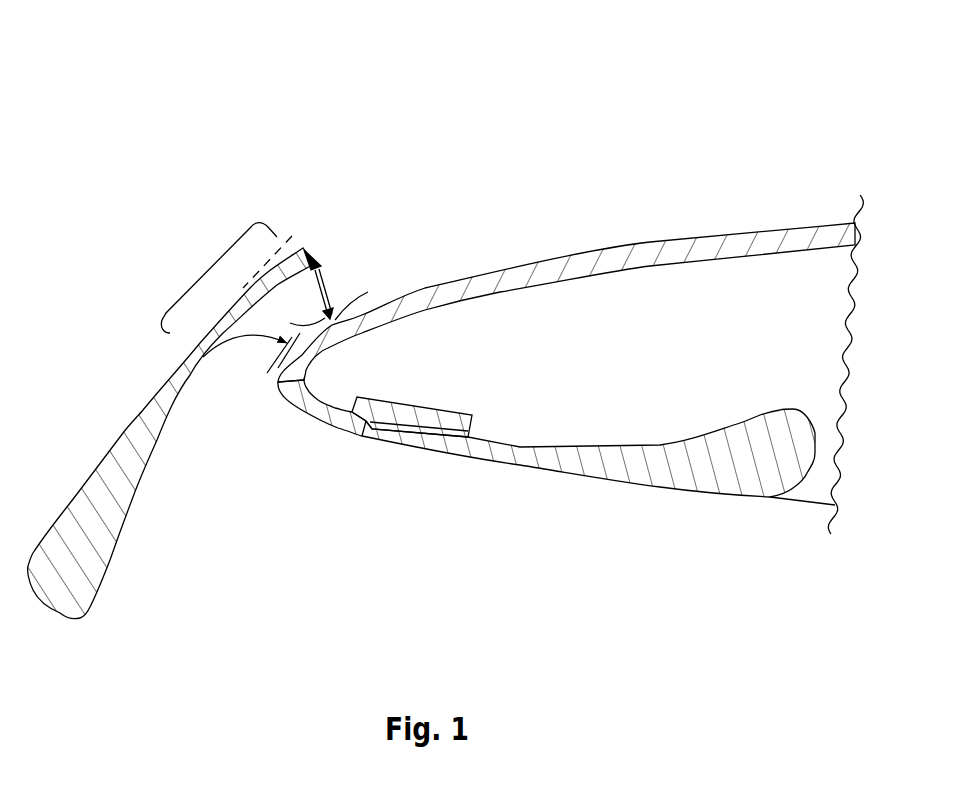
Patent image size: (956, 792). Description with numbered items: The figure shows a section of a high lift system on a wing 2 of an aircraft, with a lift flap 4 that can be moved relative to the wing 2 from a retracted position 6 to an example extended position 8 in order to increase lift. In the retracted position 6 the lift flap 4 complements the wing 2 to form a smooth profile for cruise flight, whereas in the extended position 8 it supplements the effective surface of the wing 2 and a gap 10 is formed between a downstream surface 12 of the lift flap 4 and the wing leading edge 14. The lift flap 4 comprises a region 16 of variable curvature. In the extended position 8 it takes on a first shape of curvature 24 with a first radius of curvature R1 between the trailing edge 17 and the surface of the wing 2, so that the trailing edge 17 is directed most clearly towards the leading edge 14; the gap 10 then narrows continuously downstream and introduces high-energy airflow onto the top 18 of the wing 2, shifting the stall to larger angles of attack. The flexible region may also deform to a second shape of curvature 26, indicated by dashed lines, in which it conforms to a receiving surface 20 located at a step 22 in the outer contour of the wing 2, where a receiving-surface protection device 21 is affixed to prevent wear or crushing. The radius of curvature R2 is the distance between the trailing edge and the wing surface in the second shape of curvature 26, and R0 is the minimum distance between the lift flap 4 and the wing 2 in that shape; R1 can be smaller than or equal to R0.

The wing 2 is at (533, 307).
The lift flap 4 is at (128, 447).
The retracted position 6 is at (628, 548).
The extended position 8 is at (190, 226).
The gap 10 is at (372, 268).
The downstream surface 12 is at (210, 362).
The wing leading edge 14 is at (180, 362).
The region of variable curvature 16 is at (201, 275).
The trailing edge 17 is at (300, 242).
The top of the wing 18 is at (750, 197).
The receiving surface 20 is at (457, 412).
The receiving-surface protection device 21 is at (392, 432).
The step 22 is at (367, 446).
The first shape of curvature 24 is at (340, 262).
The second shape of curvature 26 is at (299, 224).
The minimum distance R0 is at (251, 353).
The first radius of curvature R1 is at (322, 307).
The radius of curvature R2 is at (322, 272).